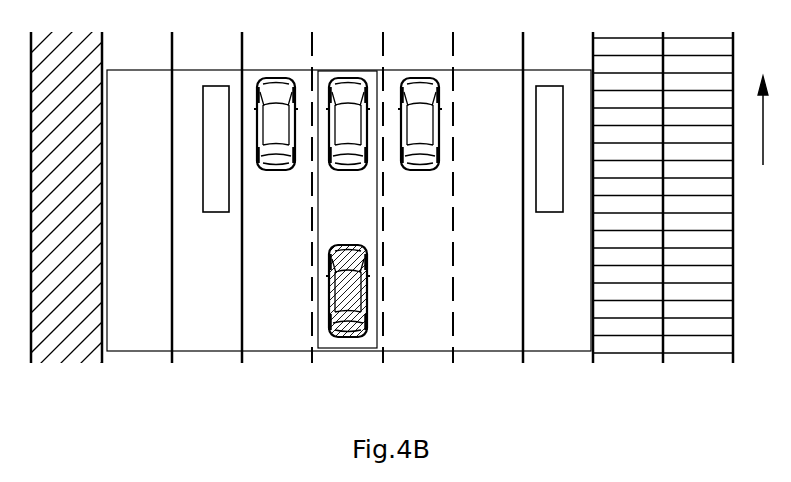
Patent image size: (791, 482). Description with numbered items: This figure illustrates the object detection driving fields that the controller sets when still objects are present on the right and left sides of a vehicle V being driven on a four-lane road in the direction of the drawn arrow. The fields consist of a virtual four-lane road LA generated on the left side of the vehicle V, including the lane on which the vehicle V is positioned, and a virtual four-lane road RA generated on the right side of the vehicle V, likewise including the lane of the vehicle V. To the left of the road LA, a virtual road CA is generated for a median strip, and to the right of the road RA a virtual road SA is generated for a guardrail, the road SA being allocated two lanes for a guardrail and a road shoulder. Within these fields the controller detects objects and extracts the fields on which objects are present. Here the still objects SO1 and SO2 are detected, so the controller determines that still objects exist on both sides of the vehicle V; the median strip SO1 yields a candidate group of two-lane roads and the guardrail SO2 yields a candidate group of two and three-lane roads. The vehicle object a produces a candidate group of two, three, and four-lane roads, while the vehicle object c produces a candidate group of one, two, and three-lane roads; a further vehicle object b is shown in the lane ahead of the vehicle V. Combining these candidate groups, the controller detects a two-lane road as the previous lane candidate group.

The virtual road for a median strip CA is at (63, 210).
The virtual four-lane road on the left side LA is at (210, 69).
The virtual four-lane road on the right side RA is at (487, 69).
The virtual road for a guardrail SA is at (725, 211).
The vehicle object a is at (276, 76).
The lane b vehicle b is at (347, 76).
The vehicle object c is at (419, 76).
The still object (median strip) SO1 is at (215, 213).
The still object (guardrail) SO2 is at (548, 213).
The vehicle V is at (347, 339).